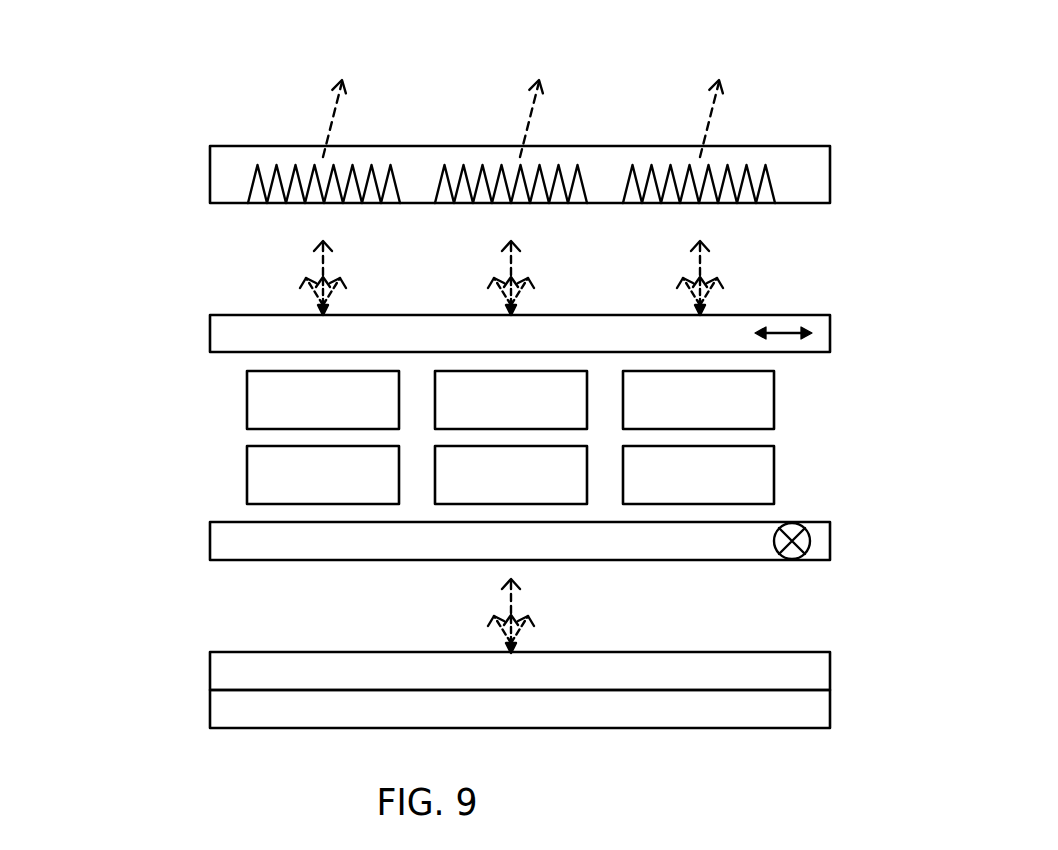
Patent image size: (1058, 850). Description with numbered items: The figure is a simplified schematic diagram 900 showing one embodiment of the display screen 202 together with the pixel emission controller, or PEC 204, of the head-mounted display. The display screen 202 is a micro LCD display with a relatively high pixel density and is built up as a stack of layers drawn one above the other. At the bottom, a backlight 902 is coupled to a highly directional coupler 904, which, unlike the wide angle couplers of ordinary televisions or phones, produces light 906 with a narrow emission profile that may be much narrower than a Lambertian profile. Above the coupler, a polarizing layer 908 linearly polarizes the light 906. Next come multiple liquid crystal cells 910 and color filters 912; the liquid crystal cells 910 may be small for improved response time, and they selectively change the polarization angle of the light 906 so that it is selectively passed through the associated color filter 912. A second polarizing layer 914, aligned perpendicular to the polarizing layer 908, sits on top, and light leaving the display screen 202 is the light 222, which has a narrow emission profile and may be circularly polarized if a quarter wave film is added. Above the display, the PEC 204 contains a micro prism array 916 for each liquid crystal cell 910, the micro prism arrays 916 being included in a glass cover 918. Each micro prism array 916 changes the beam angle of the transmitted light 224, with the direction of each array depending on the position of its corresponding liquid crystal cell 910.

The diagram 900 is at (866, 89).
The transmitted light 224 is at (246, 94).
The light 222 is at (246, 287).
The PEC 204 is at (132, 146).
The display screen 202 is at (120, 316).
The glass cover 918 is at (810, 176).
The micro prism array 916 is at (388, 200).
The polarizing layer 914 is at (520, 333).
The color filters 912 is at (510, 400).
The liquid crystal cells 910 is at (510, 475).
The polarizing layer 908 is at (520, 541).
The light 906 is at (377, 637).
The highly directional coupler 904 is at (520, 671).
The backlight 902 is at (520, 709).